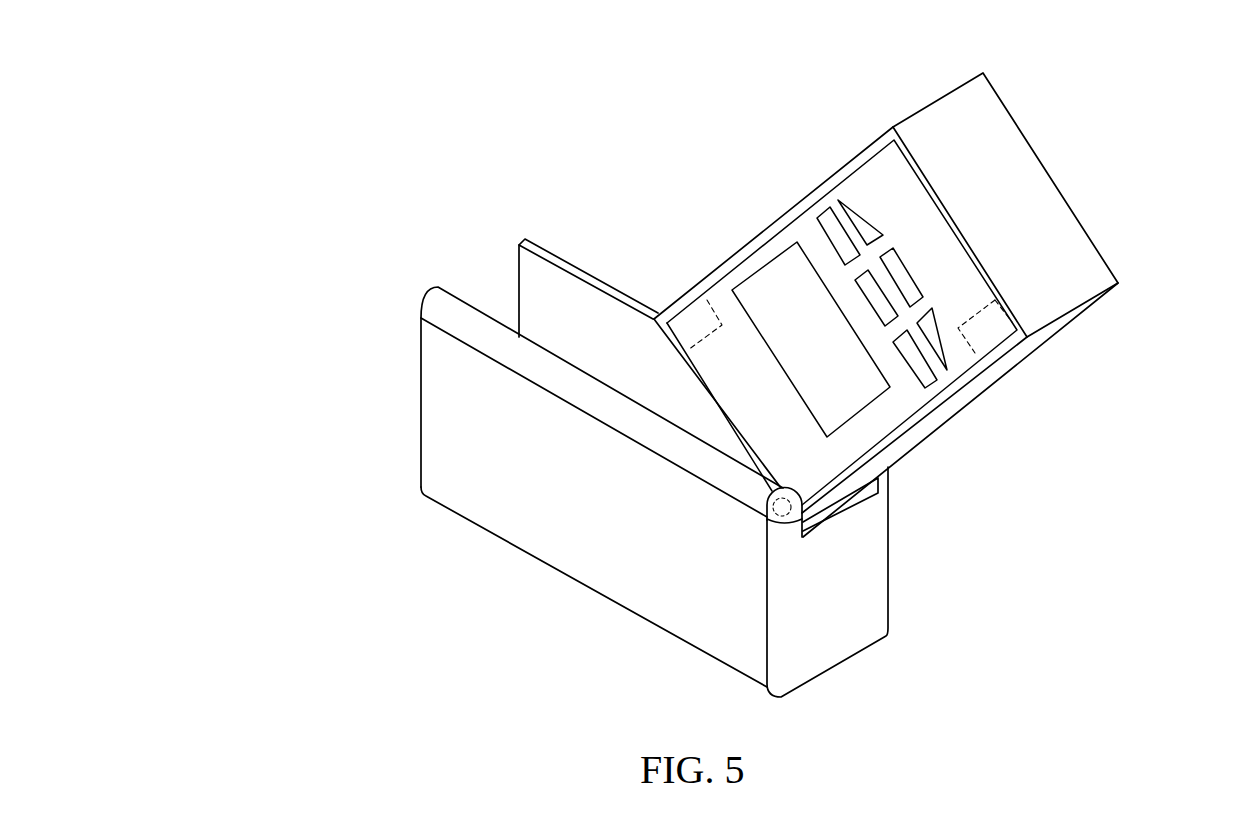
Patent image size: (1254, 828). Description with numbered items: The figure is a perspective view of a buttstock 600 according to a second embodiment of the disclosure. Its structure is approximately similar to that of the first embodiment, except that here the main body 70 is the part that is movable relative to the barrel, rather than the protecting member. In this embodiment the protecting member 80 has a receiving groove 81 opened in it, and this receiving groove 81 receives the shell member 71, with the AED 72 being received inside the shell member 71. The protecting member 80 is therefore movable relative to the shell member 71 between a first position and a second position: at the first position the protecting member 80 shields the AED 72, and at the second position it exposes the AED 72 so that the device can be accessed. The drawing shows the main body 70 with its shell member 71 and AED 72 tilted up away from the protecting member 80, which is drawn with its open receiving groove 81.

The buttstock 600 is at (141, 71).
The main body 70 is at (949, 285).
The shell member 71 is at (997, 158).
The AED 72 is at (933, 253).
The protecting member 80 is at (558, 520).
The receiving groove 81 is at (592, 315).